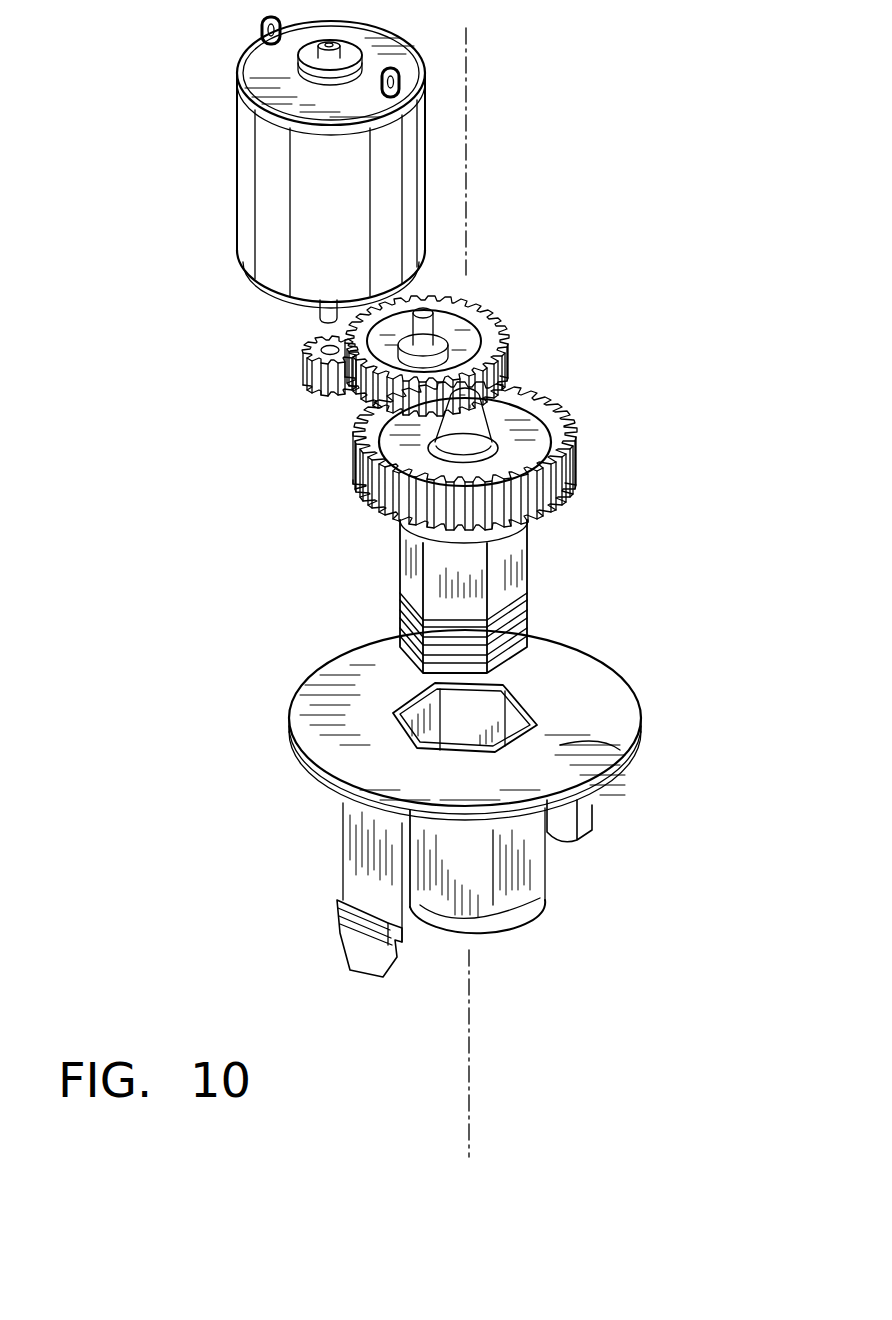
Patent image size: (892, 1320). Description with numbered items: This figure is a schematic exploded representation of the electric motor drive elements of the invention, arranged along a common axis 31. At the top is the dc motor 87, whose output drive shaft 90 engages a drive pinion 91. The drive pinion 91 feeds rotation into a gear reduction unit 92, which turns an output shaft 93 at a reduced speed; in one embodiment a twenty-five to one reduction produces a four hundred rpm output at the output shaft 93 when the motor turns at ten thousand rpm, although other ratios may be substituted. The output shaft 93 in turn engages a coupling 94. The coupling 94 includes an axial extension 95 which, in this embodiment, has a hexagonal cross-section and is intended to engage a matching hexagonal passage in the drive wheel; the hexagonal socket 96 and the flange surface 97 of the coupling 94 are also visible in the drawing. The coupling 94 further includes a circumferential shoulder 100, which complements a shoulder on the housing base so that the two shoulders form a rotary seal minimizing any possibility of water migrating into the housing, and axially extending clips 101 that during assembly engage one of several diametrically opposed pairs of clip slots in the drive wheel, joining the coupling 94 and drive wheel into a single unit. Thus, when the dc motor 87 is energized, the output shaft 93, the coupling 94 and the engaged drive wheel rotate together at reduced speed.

The axis 31 is at (469, 1070).
The dc motor 87 is at (275, 172).
The output drive shaft 90 is at (330, 318).
The drive pinion 91 is at (305, 352).
The gear reduction unit 92 is at (538, 393).
The output shaft 93 is at (505, 558).
The coupling 94 is at (647, 711).
The axial extension 95 is at (533, 858).
The hexagonal socket 96 is at (513, 707).
The flange surface 97 is at (578, 745).
The circumferential shoulder 100 is at (292, 714).
The axially extending clips 101 is at (355, 853).